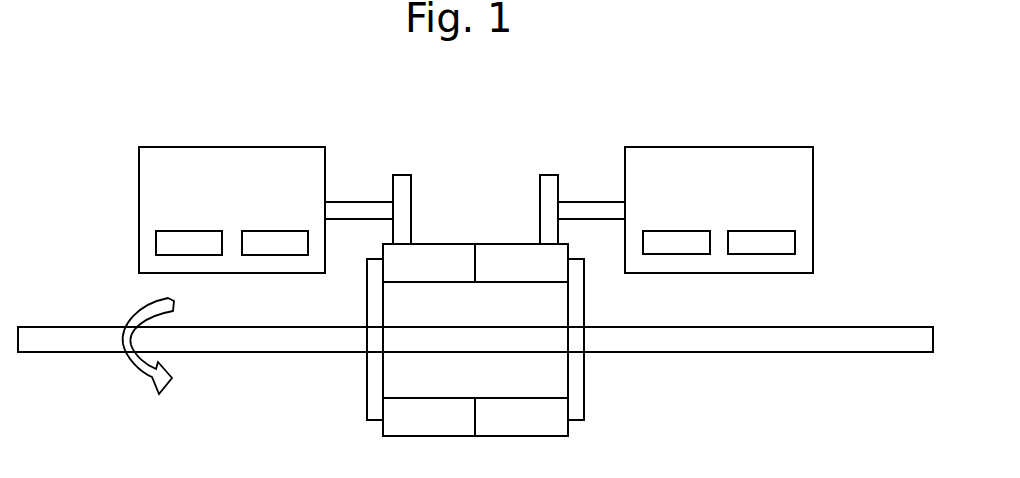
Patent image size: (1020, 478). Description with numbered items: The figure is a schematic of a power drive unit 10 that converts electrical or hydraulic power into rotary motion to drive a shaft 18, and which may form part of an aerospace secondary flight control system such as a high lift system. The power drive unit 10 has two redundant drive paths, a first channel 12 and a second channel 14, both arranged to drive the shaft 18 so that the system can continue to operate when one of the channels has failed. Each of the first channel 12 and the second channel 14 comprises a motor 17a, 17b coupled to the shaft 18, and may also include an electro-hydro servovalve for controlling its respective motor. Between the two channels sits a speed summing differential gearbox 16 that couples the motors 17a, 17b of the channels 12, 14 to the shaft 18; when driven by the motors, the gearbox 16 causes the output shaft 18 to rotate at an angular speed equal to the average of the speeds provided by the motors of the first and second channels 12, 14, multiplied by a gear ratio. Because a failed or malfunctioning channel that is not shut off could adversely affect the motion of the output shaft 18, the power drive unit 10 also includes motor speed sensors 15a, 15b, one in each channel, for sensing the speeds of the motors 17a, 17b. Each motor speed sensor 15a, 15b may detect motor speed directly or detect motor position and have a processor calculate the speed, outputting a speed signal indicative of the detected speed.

The power drive unit 10 is at (853, 125).
The first channel 12 is at (195, 147).
The second channel 14 is at (752, 147).
The motor speed sensor 15a is at (274, 231).
The motor speed sensor 15b is at (680, 231).
The speed summing differential gearbox 16 is at (440, 244).
The motor 17a is at (156, 243).
The motor 17b is at (795, 237).
The shaft 18 is at (843, 352).